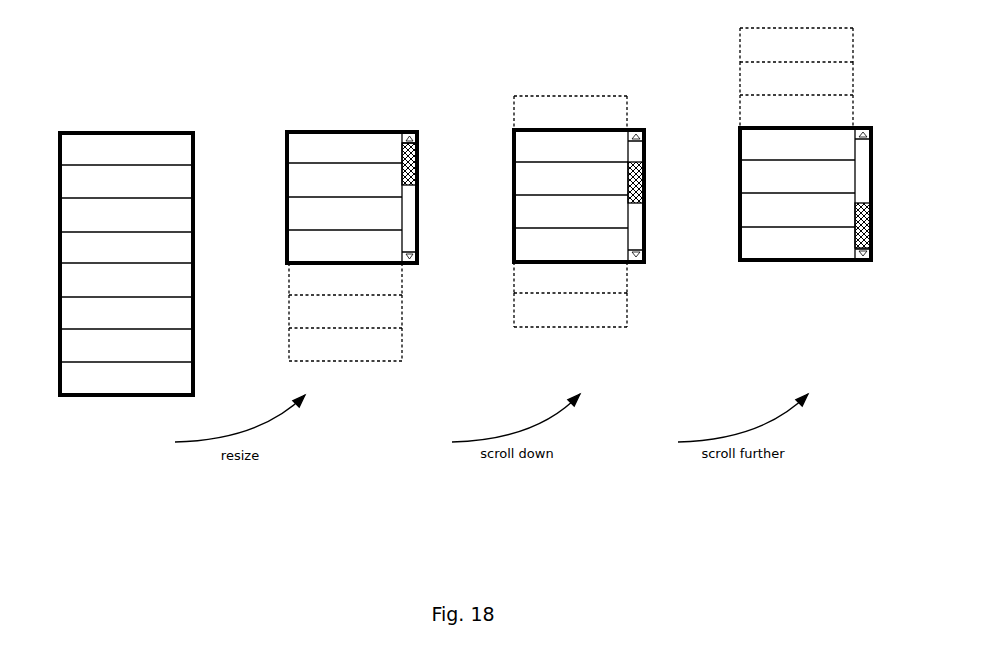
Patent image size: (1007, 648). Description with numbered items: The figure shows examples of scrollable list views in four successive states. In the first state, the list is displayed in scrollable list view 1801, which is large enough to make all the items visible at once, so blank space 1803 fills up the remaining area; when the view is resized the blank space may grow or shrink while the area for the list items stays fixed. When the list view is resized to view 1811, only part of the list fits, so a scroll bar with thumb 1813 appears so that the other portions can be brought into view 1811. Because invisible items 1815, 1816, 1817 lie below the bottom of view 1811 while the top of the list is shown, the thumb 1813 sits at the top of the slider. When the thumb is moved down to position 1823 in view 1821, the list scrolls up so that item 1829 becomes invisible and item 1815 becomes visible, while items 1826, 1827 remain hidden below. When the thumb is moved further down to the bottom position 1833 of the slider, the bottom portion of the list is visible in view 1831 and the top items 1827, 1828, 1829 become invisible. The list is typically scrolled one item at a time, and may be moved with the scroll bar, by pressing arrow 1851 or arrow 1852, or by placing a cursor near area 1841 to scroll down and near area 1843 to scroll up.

The scrollable list view 1801 is at (193, 133).
The blank space 1803 is at (141, 378).
The resized view 1811 is at (417, 132).
The scroll bar thumb 1813 is at (418, 168).
The invisible item 1815 is at (289, 278).
The invisible item 1816 is at (289, 311).
The invisible item 1817 is at (289, 344).
The scrolled view 1821 is at (644, 130).
The thumb position 1823 is at (644, 180).
The invisible item 1826 is at (514, 277).
The invisible item 1827 is at (514, 310).
The list item 1828 is at (740, 77).
The list item 1829 is at (514, 103).
The bottom-scrolled view 1831 is at (871, 128).
The bottom thumb position 1833 is at (871, 222).
The scroll-down area 1841 is at (587, 131).
The scroll-up area 1843 is at (595, 258).
The up arrow 1851 is at (647, 133).
The down arrow 1852 is at (647, 252).